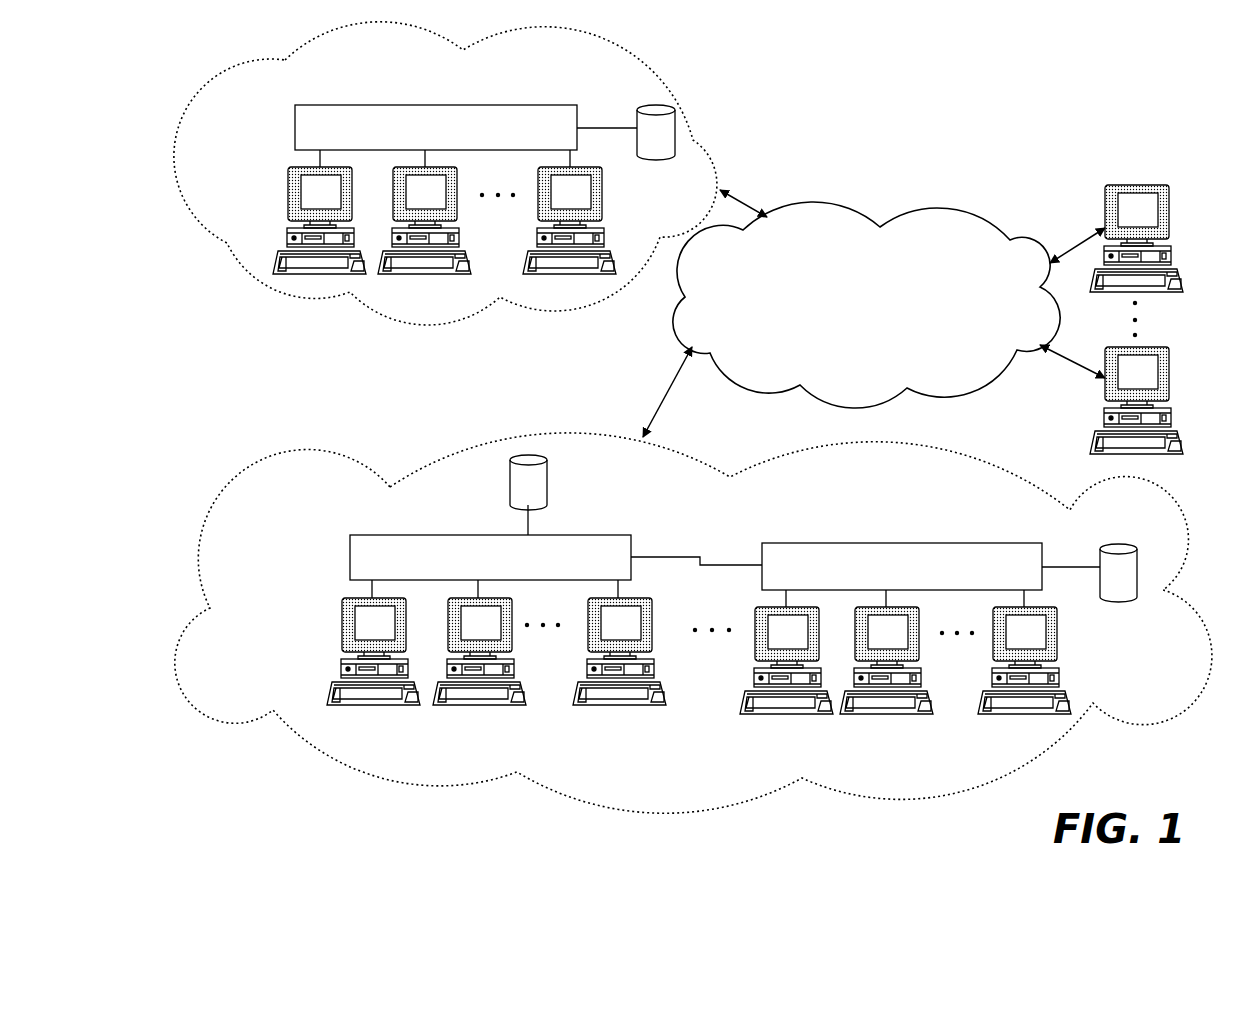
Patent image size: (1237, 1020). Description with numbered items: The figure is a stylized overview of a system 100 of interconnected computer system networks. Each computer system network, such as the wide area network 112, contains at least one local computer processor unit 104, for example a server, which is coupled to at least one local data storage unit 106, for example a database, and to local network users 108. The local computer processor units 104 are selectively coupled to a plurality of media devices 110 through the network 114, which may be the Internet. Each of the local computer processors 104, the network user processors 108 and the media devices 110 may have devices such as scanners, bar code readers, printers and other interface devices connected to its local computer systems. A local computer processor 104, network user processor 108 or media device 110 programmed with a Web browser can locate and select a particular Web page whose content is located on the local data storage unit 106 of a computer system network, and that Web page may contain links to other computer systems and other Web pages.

The system 100 is at (873, 140).
The local computer processor unit 104 is at (380, 112).
The local data storage unit 106 is at (675, 122).
The local network users 108 is at (605, 233).
The media devices 110 is at (1137, 185).
The wide area network 112 is at (445, 453).
The network 114 is at (952, 208).